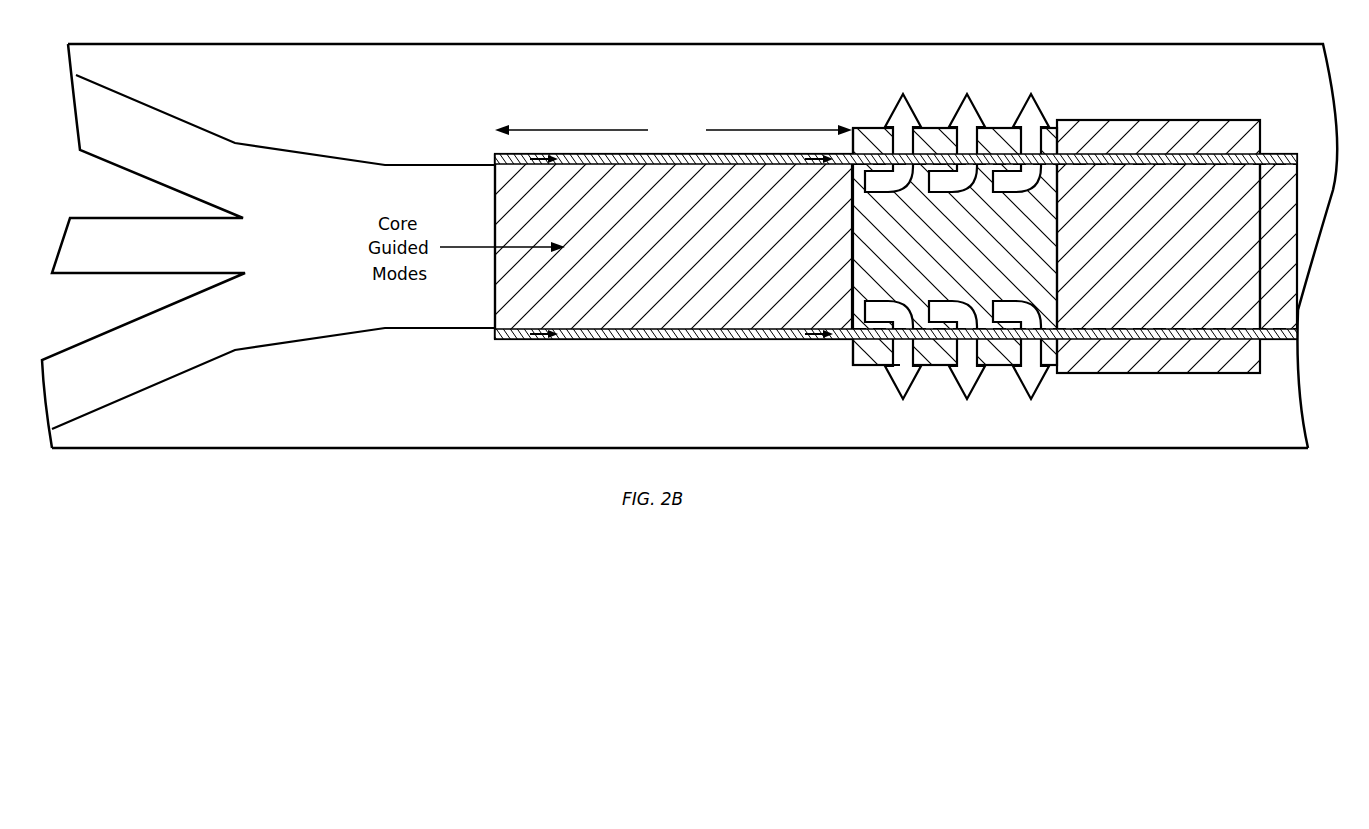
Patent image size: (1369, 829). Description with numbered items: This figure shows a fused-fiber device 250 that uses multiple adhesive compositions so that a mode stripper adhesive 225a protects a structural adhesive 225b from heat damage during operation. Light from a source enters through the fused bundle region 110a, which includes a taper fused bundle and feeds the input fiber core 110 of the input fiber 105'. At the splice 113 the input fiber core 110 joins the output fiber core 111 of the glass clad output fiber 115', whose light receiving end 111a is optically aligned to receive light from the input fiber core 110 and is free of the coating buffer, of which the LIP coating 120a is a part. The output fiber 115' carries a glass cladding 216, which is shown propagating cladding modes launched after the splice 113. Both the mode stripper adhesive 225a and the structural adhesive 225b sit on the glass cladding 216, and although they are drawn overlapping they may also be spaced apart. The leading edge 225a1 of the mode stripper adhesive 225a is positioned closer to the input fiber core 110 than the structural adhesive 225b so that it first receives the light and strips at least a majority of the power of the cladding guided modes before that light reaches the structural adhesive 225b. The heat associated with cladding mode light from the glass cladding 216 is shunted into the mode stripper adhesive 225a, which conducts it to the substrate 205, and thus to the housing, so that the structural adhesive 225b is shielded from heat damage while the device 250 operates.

The fused-fiber device 250 is at (1124, 12).
The substrate 205 is at (724, 423).
The input fiber 105' is at (268, 246).
The input fiber core 110 is at (337, 258).
The fused bundle region 110a is at (259, 106).
The output fiber core 111 is at (692, 267).
The light receiving end 111a is at (673, 130).
The splice 113 is at (494, 183).
The glass cladding 216 is at (309, 154).
The LIP coating 120a is at (858, 160).
The mode stripper adhesive 225a is at (997, 137).
The leading edge 225a1 is at (853, 351).
The structural adhesive 225b is at (1134, 133).
The glass clad output fiber 115' is at (1018, 287).